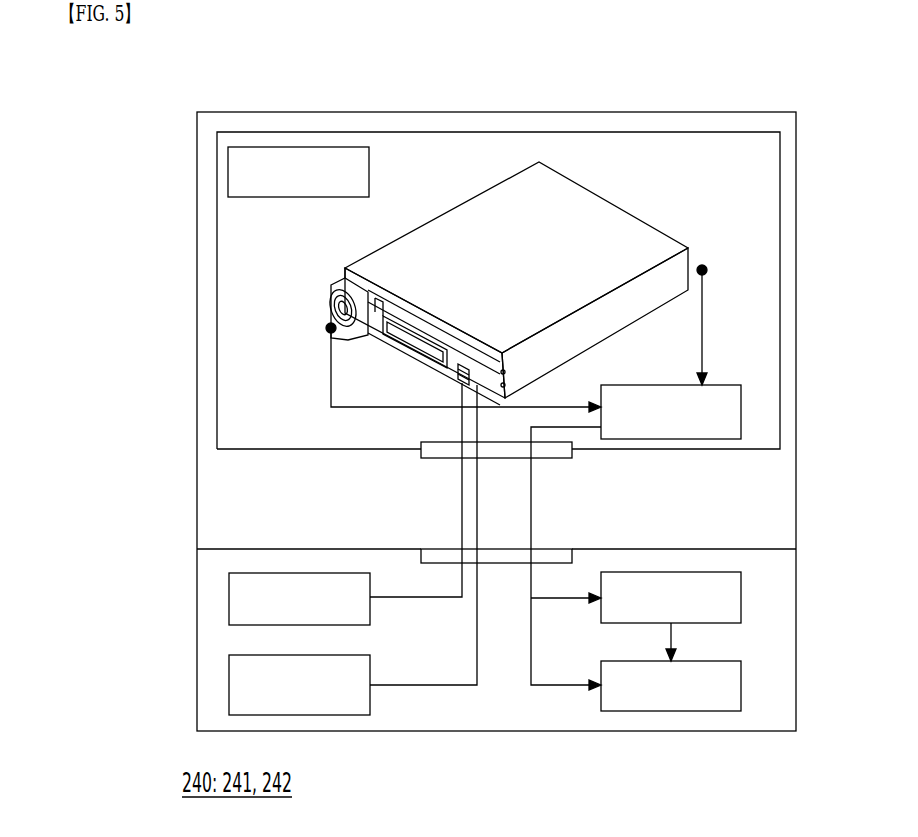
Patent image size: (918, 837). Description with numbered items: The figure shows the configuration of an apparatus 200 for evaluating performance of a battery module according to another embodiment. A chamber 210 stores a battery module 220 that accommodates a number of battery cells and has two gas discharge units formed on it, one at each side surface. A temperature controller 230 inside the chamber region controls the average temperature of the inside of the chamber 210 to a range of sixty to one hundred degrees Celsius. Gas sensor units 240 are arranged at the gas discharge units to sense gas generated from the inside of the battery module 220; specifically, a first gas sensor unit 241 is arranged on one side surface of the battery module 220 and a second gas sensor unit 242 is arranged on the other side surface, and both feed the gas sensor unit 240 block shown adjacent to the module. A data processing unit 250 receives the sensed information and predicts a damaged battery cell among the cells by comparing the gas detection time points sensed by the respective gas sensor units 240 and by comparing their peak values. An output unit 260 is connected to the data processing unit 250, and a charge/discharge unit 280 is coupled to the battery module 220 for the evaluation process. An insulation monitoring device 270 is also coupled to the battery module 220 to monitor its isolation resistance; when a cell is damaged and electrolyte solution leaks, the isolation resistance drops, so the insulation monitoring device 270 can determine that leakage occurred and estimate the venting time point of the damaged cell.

The apparatus for evaluating performance of a battery module 200 is at (178, 101).
The chamber 210 is at (780, 167).
The battery module 220 is at (370, 258).
The temperature controller 230 is at (228, 167).
The gas sensor unit 240 is at (741, 412).
The first gas sensor unit 241 is at (331, 328).
The second gas sensor unit 242 is at (702, 270).
The data processing unit 250 is at (741, 686).
The output unit 260 is at (741, 598).
The insulation monitoring device 270 is at (229, 686).
The charge/discharge unit 280 is at (229, 598).